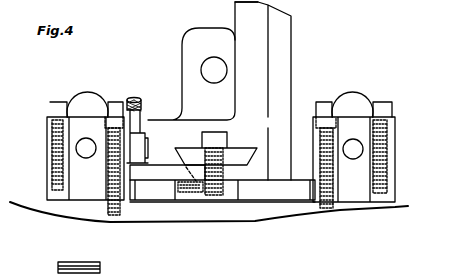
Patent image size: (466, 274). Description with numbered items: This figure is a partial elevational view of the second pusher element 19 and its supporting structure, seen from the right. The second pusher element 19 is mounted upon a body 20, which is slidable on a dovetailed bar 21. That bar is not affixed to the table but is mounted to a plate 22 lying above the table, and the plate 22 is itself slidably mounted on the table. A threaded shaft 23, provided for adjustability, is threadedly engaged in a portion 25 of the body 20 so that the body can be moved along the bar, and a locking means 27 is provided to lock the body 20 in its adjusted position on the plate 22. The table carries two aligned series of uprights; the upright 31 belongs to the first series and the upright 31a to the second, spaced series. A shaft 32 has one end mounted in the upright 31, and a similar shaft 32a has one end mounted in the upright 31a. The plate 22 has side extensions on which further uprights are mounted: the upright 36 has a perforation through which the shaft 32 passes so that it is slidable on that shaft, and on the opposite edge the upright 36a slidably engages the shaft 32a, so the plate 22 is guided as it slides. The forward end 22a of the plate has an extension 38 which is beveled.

The second pusher element 19 is at (277, 57).
The body 20 is at (257, 59).
The dovetailed bar 21 is at (233, 168).
The plate 22 is at (280, 195).
The forward end of the plate 22a is at (148, 195).
The threaded shaft 23 is at (213, 83).
The portion of the body 25 is at (205, 38).
The locking means 27 is at (139, 115).
The upright 31 is at (85, 195).
The upright 31a is at (355, 195).
The shaft 32 is at (86, 158).
The shaft 32a is at (363, 146).
The upright 36 is at (88, 108).
The upright 36a is at (358, 108).
The extension 38 is at (193, 192).